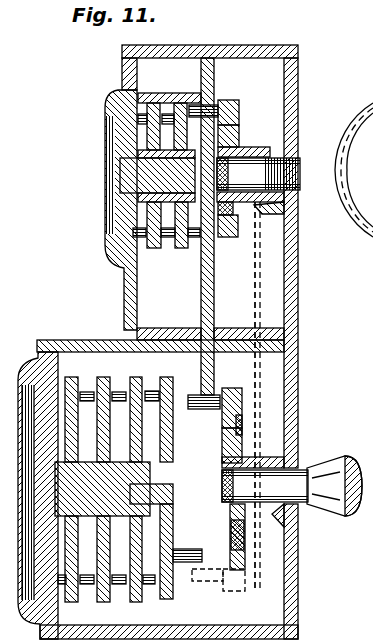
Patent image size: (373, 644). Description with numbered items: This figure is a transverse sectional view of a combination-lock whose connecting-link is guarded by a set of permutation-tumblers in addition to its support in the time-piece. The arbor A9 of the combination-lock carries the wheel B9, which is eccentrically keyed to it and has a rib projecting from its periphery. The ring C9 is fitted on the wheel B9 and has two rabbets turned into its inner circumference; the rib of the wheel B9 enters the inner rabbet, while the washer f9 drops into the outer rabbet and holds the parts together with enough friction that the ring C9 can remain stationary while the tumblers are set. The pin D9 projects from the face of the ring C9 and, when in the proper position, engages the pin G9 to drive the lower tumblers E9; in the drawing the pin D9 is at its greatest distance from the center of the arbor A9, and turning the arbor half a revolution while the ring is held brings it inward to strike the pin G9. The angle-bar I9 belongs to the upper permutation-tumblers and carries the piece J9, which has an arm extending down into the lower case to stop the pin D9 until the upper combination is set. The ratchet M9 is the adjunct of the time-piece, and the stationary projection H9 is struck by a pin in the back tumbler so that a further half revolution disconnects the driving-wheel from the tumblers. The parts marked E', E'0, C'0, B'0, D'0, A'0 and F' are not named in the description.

The angle-bar I9 is at (170, 94).
The piece J9 is at (201, 298).
The upper contact plate E' is at (215, 189).
The upper contact plate E'0 is at (185, 189).
The upper bearing block C'0 is at (241, 111).
The upper bearing base B'0 is at (244, 141).
The upper collar D'0 is at (201, 120).
The upper horizontal shaft A'0 is at (258, 174).
The ratchet M9 is at (246, 396).
The pin D9 is at (196, 396).
The ring C9 is at (222, 430).
The wheel B9 is at (222, 447).
The arbor A9 is at (292, 484).
The lower bracket F' is at (246, 537).
The washer f9 is at (244, 540).
The lower tumblers E9 is at (72, 602).
The pin G9 is at (192, 548).
The stationary projection H9 is at (45, 593).